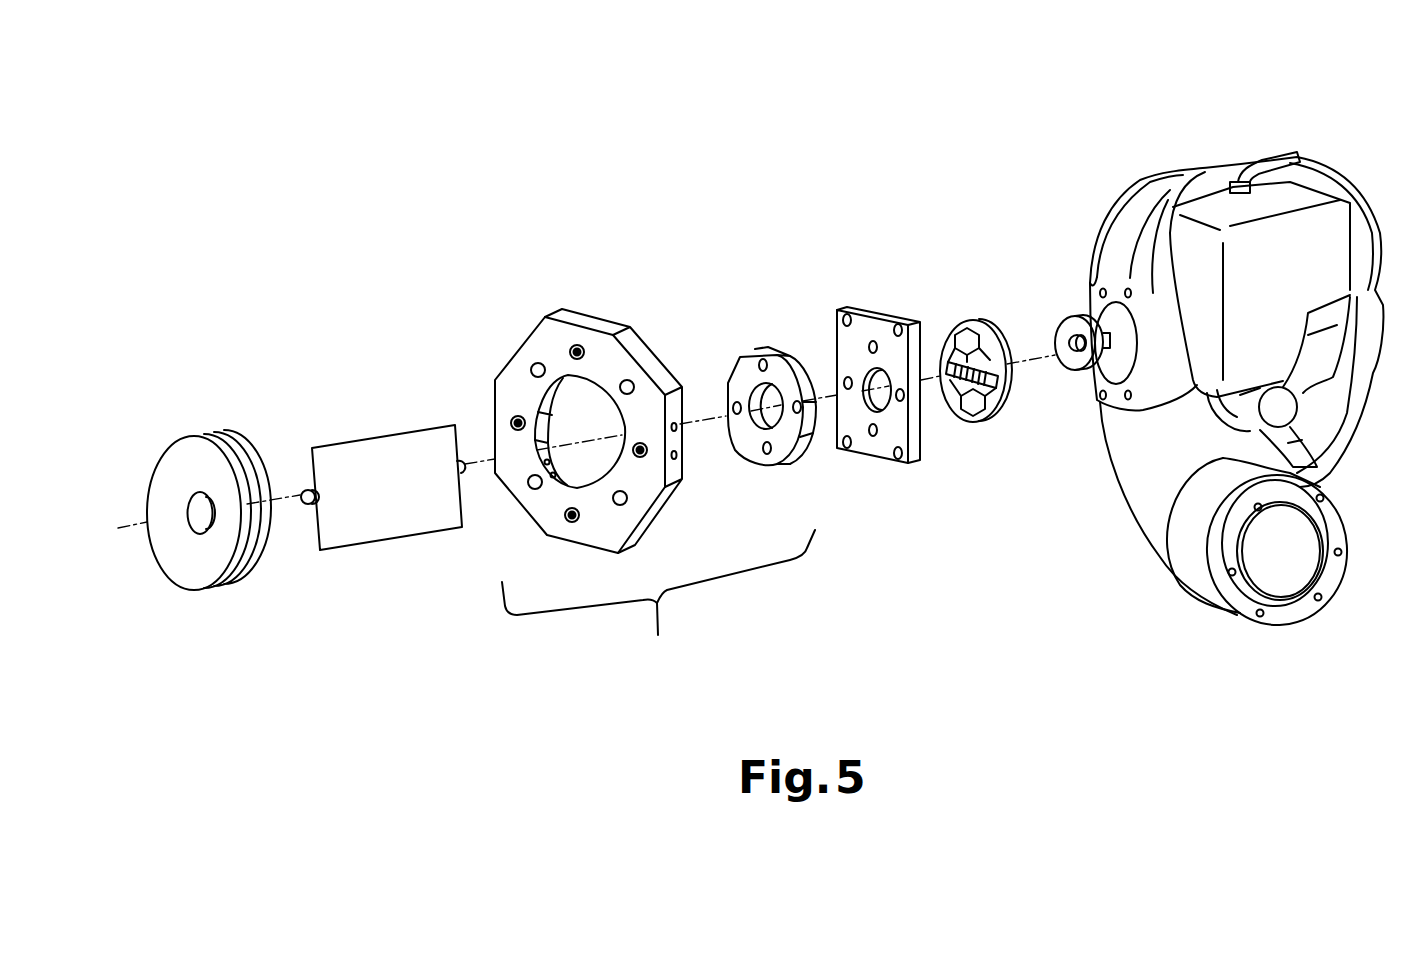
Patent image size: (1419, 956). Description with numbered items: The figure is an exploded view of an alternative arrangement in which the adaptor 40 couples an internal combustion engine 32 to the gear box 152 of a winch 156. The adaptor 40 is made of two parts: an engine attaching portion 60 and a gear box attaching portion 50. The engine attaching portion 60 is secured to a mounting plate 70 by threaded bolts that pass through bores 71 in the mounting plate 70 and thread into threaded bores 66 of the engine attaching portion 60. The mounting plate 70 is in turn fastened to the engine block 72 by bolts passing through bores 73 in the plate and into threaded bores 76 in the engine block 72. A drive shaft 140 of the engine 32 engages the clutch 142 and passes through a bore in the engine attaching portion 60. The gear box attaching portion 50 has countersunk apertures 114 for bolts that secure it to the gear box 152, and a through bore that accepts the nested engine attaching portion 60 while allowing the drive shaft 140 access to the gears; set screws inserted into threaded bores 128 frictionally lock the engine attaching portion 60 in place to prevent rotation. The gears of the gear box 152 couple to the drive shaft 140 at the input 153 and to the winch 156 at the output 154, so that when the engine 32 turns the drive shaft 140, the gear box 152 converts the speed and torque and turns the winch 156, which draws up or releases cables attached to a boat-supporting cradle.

The engine 32 is at (1236, 349).
The adaptor 40 is at (658, 599).
The gear box attaching portion 50 is at (605, 405).
The engine attaching portion 60 is at (760, 375).
The threaded bores 66 is at (767, 453).
The mounting plate 70 is at (865, 367).
The bores 71 is at (874, 436).
The engine block 72 is at (1158, 347).
The bores 73 is at (891, 325).
The threaded bores 76 is at (1128, 400).
The apertures 114 is at (580, 517).
The threaded bores 128 is at (677, 457).
The drive shaft 140 is at (1067, 357).
The clutch 142 is at (966, 325).
The gear box 152 is at (370, 542).
The input 153 is at (460, 465).
The output 154 is at (305, 493).
The winch 156 is at (168, 448).